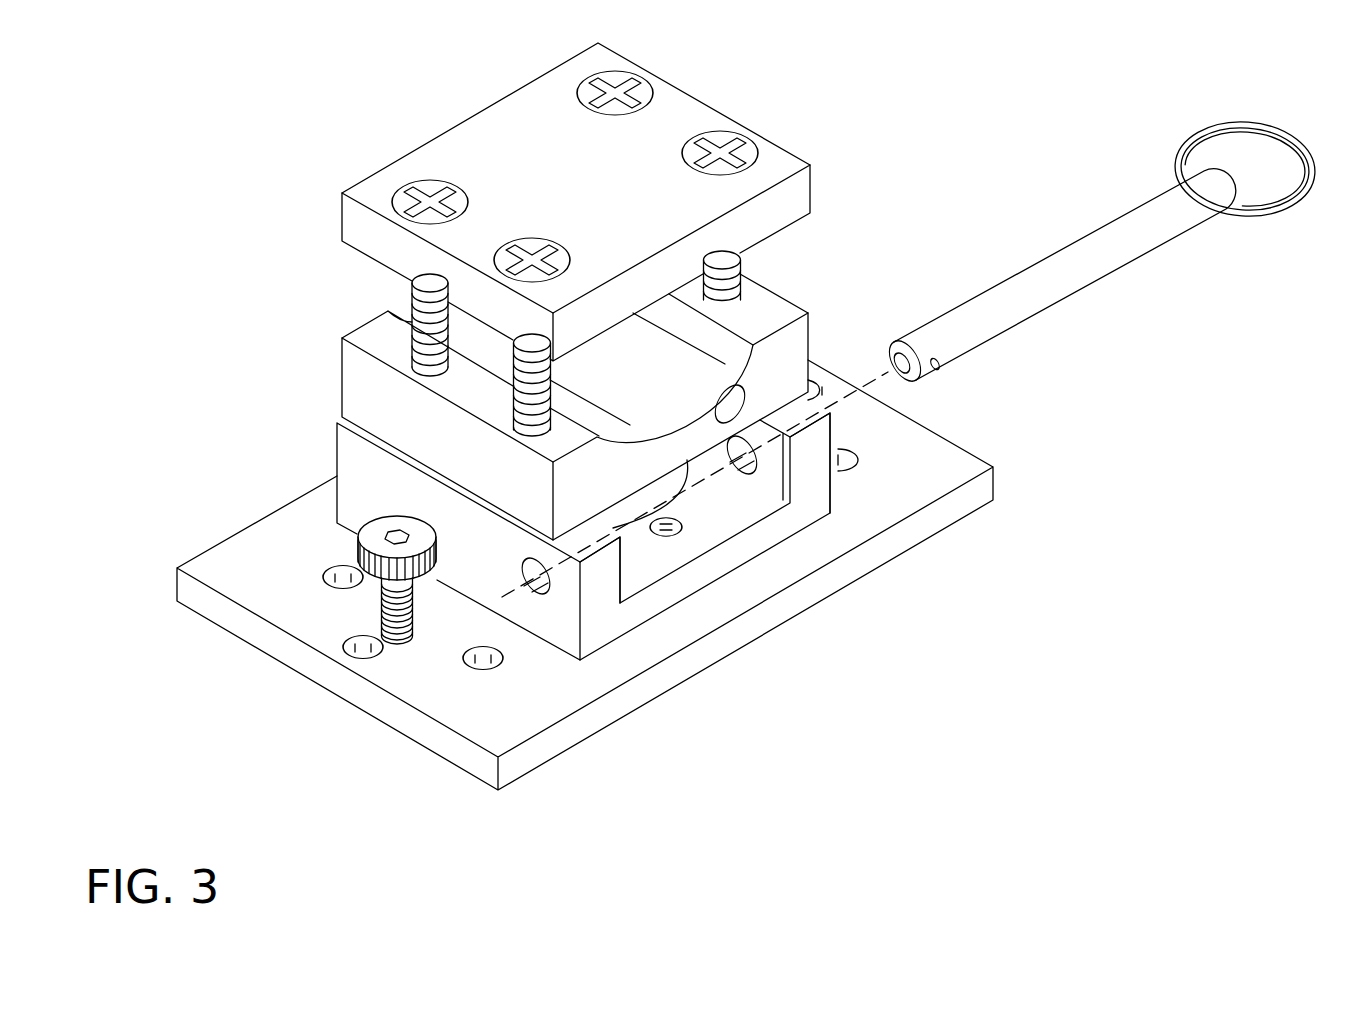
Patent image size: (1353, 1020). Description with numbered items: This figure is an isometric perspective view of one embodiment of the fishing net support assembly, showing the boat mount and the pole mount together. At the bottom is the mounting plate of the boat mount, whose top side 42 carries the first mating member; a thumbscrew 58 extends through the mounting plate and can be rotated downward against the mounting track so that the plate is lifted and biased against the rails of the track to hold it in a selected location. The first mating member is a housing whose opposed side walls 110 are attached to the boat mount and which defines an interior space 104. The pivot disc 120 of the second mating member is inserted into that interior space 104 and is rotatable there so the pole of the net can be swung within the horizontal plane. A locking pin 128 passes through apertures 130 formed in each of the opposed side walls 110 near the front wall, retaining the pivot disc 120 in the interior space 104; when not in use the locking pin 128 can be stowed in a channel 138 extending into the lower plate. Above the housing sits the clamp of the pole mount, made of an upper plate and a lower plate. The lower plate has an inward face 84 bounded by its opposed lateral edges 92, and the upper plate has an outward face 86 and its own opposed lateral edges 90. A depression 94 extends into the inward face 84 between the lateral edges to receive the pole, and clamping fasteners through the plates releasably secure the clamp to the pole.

The top side 42 is at (286, 578).
The thumbscrew 58 is at (378, 570).
The inward face 84 is at (738, 330).
The outward face 86 is at (557, 184).
The opposed lateral edges 90 is at (790, 186).
The opposed lateral edges 92 is at (793, 348).
The depression 94 is at (653, 392).
The interior space 104 is at (695, 508).
The opposed side walls 110 is at (593, 600).
The pivot disc 120 is at (628, 510).
The locking pin 128 is at (1073, 247).
The apertures 130 is at (523, 572).
The channel 138 is at (727, 410).